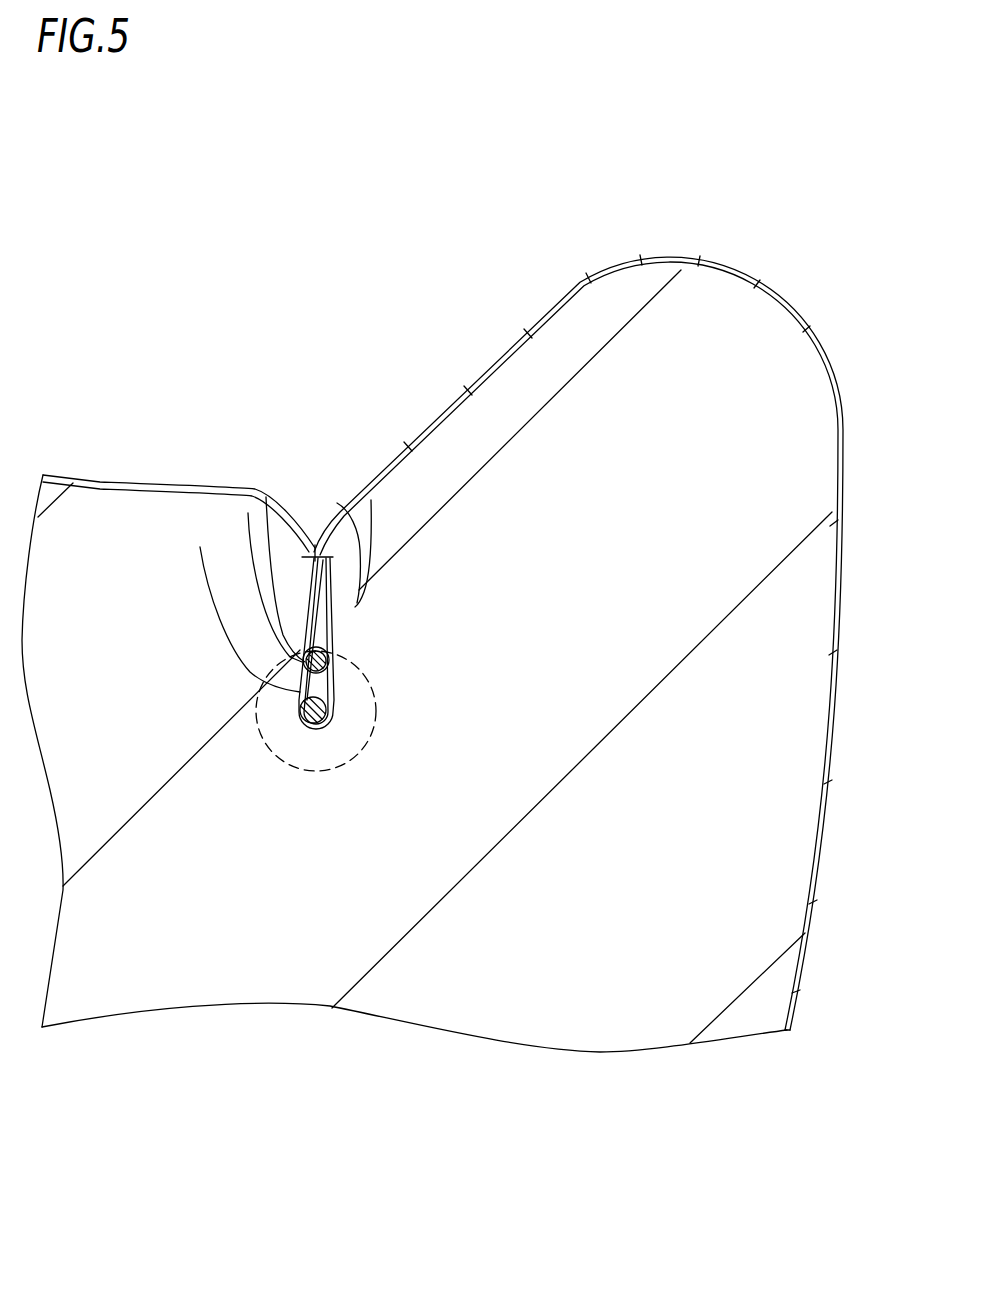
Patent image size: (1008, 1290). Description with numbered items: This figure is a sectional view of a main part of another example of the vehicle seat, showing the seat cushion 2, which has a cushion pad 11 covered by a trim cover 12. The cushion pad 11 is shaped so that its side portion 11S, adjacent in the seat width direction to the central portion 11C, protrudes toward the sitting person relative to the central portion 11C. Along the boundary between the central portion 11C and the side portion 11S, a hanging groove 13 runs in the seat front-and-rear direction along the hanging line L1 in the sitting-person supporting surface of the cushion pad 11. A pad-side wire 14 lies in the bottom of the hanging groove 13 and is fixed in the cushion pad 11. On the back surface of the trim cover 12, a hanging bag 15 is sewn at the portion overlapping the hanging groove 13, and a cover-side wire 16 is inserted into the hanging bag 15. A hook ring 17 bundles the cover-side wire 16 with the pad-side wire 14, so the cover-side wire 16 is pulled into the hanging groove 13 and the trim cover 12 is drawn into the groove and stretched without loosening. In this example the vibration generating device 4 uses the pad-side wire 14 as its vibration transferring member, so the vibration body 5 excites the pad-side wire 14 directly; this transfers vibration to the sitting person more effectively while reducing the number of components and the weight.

The seat cushion 2 is at (768, 271).
The cushion pad 11 is at (600, 1060).
The side portion 11S is at (677, 323).
The central portion 11C is at (92, 522).
The trim cover 12 is at (828, 353).
The hanging groove 13 is at (337, 503).
The pad-side wire 14 is at (316, 731).
The hanging bag 15 is at (335, 609).
The cover-side wire 16 is at (248, 513).
The hook ring 17 is at (200, 547).
The vibration generating device 4 is at (208, 1057).
The vibration body 5 is at (266, 743).
The hanging line L1 is at (314, 552).